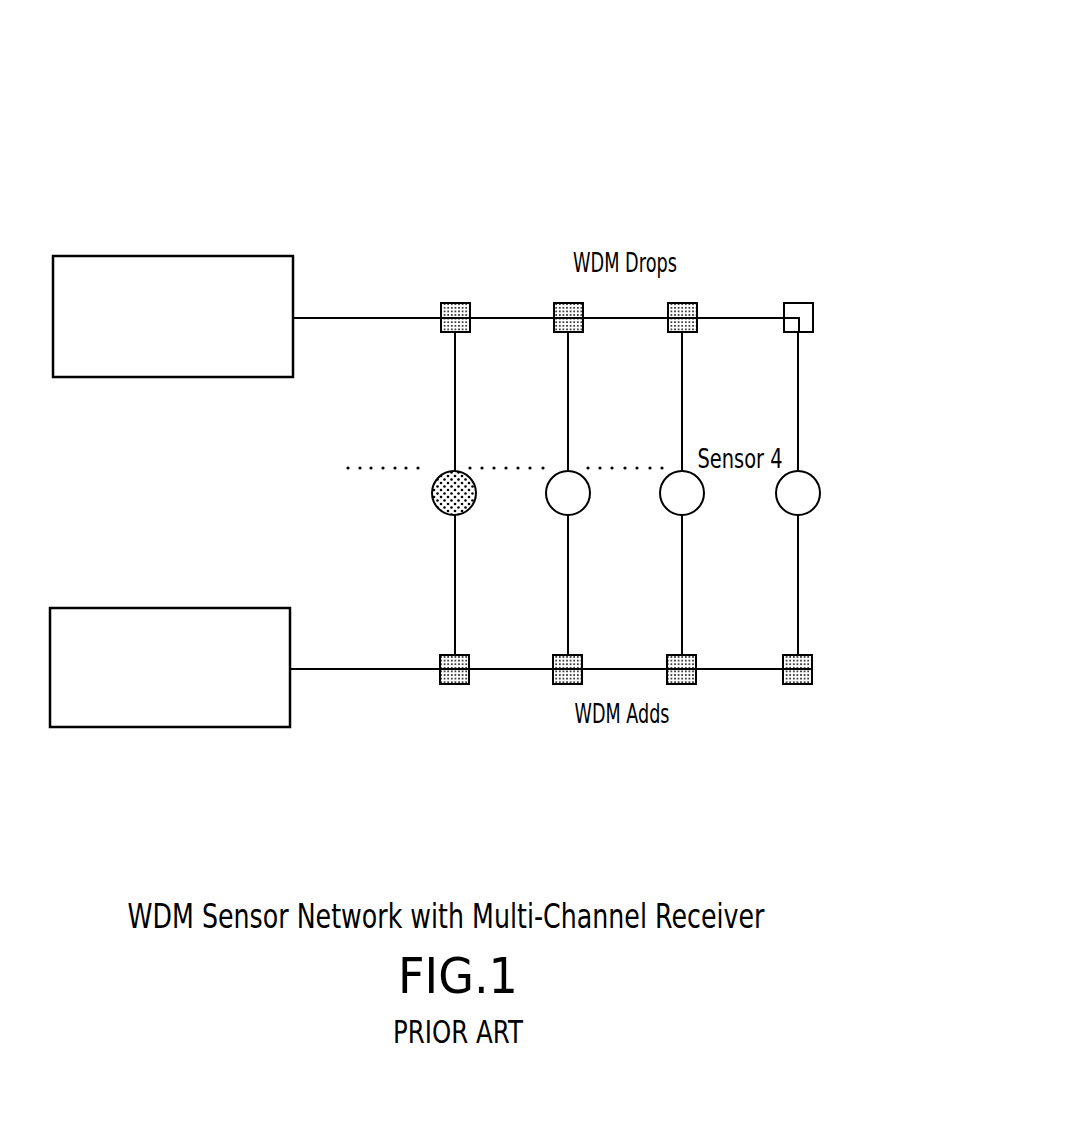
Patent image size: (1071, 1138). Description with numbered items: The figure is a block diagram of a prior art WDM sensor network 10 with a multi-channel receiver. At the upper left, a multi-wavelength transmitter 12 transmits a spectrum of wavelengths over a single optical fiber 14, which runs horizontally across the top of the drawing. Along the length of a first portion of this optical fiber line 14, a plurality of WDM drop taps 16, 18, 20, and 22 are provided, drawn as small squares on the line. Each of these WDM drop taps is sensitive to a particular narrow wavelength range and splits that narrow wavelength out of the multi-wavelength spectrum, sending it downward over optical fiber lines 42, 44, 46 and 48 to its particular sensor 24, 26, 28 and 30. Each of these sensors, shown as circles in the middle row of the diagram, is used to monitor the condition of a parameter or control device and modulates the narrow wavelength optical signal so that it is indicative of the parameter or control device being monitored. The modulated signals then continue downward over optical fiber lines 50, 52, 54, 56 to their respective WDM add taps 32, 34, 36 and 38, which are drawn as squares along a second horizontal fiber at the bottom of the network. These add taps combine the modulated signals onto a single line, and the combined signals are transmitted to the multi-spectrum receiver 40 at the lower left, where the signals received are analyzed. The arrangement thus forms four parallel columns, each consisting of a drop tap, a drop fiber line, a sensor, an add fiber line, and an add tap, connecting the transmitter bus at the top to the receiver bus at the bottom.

The WDM sensor network 10 is at (800, 110).
The multi-wavelength transmitter 12 is at (173, 256).
The optical fiber 14 is at (365, 316).
The WDM drop tap 16 is at (453, 302).
The WDM drop tap 18 is at (568, 302).
The WDM drop tap 20 is at (683, 302).
The WDM drop tap 22 is at (798, 303).
The sensor 24 is at (432, 493).
The sensor 26 is at (546, 493).
The sensor 28 is at (660, 493).
The sensor 30 is at (776, 493).
The WDM add tap 32 is at (798, 684).
The WDM add tap 34 is at (682, 684).
The WDM add tap 36 is at (568, 684).
The WDM add tap 38 is at (455, 684).
The multi-spectrum receiver 40 is at (168, 727).
The optical fiber line 42 is at (455, 400).
The optical fiber line 44 is at (568, 400).
The optical fiber line 46 is at (682, 400).
The optical fiber line 48 is at (798, 400).
The optical fiber line 50 is at (455, 613).
The optical fiber line 52 is at (568, 613).
The optical fiber line 54 is at (682, 613).
The optical fiber line 56 is at (798, 613).